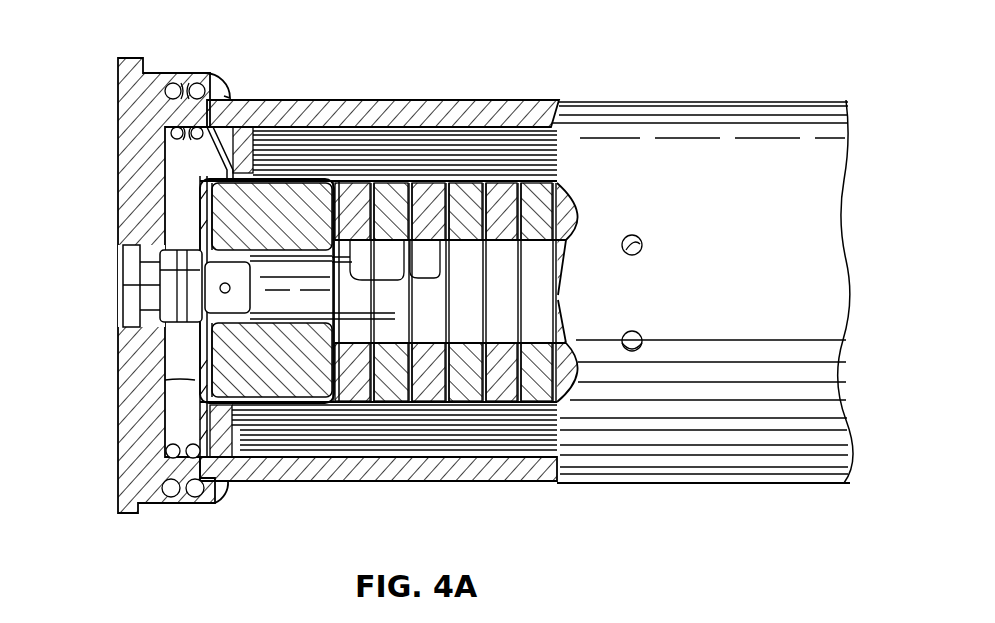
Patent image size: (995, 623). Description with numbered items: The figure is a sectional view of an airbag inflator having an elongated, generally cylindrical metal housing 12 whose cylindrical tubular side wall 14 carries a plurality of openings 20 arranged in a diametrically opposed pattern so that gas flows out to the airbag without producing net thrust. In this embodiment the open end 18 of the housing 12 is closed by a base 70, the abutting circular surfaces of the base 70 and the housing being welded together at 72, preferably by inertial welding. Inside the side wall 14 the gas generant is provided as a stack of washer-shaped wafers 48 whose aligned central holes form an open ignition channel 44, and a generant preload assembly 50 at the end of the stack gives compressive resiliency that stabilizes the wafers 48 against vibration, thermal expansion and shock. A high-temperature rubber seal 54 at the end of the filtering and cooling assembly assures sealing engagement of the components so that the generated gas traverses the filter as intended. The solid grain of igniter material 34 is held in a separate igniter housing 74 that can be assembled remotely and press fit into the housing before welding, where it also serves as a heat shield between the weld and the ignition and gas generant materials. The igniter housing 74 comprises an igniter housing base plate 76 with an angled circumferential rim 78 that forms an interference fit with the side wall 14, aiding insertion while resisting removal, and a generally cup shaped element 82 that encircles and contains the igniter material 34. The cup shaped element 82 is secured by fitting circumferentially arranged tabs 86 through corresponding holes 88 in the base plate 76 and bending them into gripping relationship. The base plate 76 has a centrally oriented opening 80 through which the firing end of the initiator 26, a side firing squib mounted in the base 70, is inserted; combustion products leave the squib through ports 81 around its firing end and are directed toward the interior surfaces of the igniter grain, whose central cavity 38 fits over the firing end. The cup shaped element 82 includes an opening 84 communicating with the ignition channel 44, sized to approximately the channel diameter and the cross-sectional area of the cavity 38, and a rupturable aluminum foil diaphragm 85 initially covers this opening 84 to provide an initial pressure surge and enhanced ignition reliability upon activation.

The housing 12 is at (538, 103).
The tubular side wall 14 is at (456, 103).
The open end 18 is at (183, 163).
The openings 20 is at (642, 240).
The initiator 26 is at (250, 262).
The igniter material 34 is at (262, 455).
The central cavity 38 is at (345, 291).
The open ignition channel 44 is at (519, 300).
The wafers 48 is at (548, 207).
The generant preload assembly 50 is at (358, 187).
The rubber seal 54 is at (247, 137).
The base 70 is at (135, 97).
The weld 72 is at (186, 118).
The igniter housing 74 is at (195, 380).
The igniter housing base plate 76 is at (207, 208).
The circumferential rim 78 is at (207, 483).
The opening 80 is at (185, 306).
The ports 81 is at (228, 295).
The cup shaped element 82 is at (320, 185).
The opening 84 is at (300, 315).
The rupturable diaphragm 85 is at (300, 287).
The tabs 86 is at (195, 425).
The holes 88 is at (190, 468).